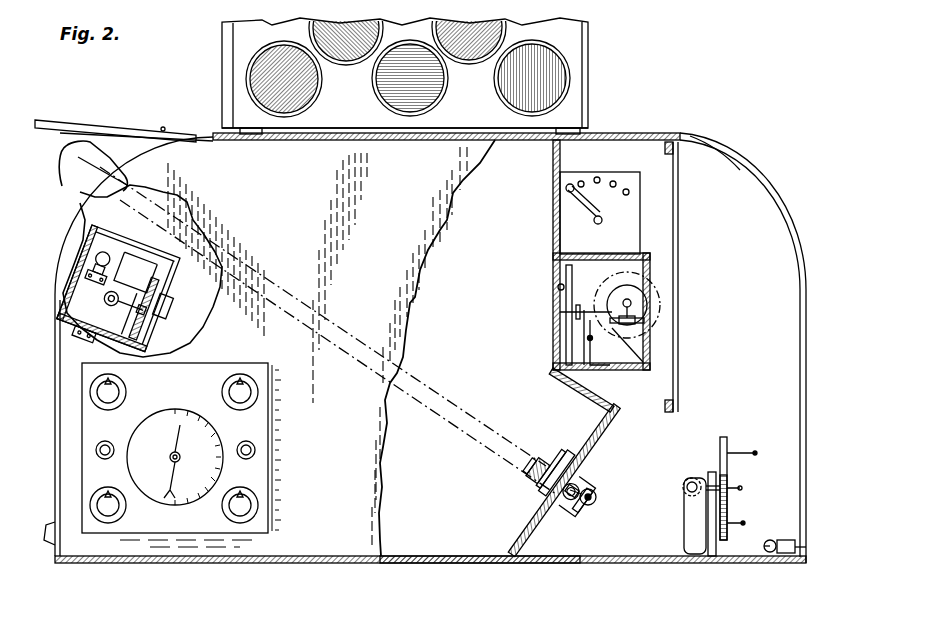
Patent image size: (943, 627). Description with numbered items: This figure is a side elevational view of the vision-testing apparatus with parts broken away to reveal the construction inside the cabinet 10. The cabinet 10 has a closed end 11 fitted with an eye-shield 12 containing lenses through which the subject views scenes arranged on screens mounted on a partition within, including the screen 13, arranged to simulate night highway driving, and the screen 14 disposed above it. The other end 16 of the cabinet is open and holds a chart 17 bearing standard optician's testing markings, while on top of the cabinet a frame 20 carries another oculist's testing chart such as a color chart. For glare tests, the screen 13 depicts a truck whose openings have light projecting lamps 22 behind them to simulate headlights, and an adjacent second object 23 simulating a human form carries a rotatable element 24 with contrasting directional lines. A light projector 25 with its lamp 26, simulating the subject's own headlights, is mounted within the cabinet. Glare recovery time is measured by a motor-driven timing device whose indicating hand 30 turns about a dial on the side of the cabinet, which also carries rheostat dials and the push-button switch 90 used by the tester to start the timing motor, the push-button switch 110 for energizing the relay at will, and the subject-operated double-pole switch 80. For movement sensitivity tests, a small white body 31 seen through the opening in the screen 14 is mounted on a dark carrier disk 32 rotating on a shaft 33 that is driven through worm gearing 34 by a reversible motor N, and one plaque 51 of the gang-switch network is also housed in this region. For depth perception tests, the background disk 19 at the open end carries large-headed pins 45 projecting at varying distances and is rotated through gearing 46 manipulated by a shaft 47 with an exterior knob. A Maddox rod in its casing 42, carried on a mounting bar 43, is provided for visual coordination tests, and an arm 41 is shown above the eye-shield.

The cabinet 10 is at (655, 126).
The closed end 11 is at (55, 403).
The eye-shield 12 is at (72, 171).
The screen 13 is at (505, 553).
The screen 14 is at (556, 318).
The other end 16 is at (705, 142).
The chart 17 is at (680, 236).
The background disk 19 is at (727, 444).
The frame 20 is at (592, 48).
The light projecting lamps 22 is at (572, 514).
The second object 23 is at (600, 425).
The rotatable element 24 is at (566, 460).
The light projector 25 is at (111, 274).
The lamp 26 is at (64, 253).
The indicating hand 30 is at (163, 435).
The small white body 31 is at (558, 288).
The carrier disk 32 is at (586, 313).
The shaft 33 is at (602, 337).
The worm gearing 34 is at (640, 310).
The reversible motor N is at (613, 311).
The arm 41 is at (72, 122).
The casing 42 is at (797, 547).
The mounting bar 43 is at (770, 540).
The pins 45 is at (744, 488).
The gearing 46 is at (712, 472).
The shaft 47 is at (690, 482).
The plaque 51 is at (640, 212).
The double-pole switch 80 is at (46, 533).
The push-button switch 90 is at (256, 450).
The push-button switch 110 is at (95, 451).